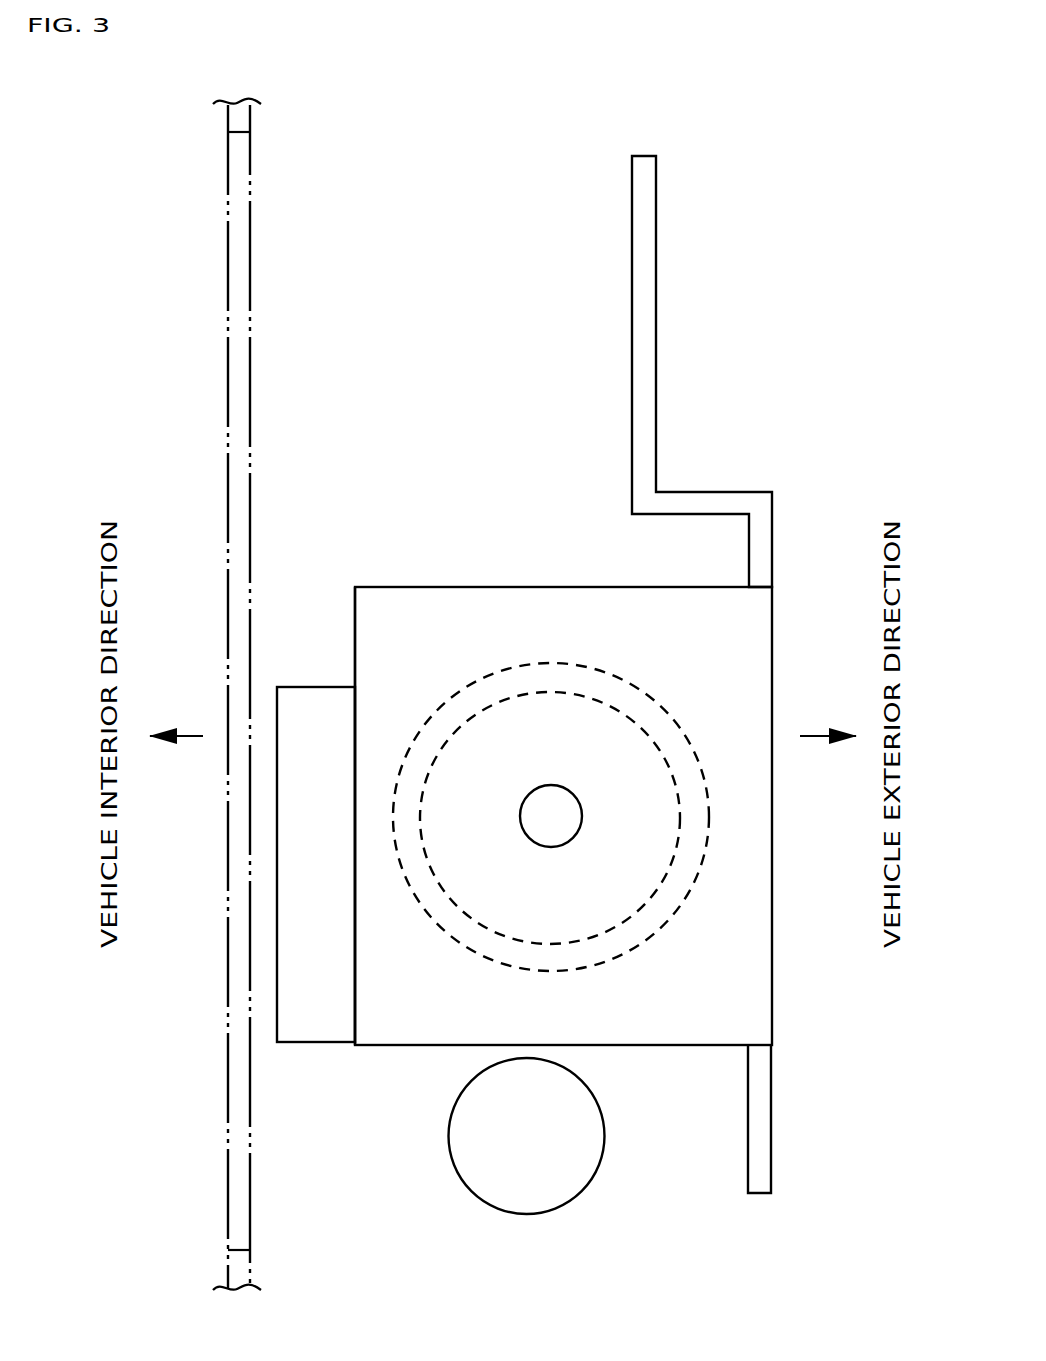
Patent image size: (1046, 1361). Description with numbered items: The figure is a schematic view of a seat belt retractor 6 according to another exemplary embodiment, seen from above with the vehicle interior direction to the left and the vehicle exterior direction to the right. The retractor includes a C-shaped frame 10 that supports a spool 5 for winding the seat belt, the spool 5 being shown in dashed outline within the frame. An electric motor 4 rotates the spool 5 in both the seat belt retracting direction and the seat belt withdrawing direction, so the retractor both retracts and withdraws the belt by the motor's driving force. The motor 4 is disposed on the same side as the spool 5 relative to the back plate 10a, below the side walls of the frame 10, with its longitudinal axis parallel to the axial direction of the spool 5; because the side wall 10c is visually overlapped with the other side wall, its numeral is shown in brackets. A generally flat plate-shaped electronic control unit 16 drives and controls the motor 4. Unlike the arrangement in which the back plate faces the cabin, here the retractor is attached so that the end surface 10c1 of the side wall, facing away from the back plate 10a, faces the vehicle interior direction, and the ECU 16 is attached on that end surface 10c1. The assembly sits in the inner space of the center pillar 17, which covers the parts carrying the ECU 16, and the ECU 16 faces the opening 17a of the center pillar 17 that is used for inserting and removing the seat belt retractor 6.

The electric motor 4 is at (545, 1168).
The spool 5 is at (588, 694).
The seat belt retractor 6 is at (413, 428).
The frame 10 is at (703, 488).
The back plate 10a is at (765, 1090).
The side wall 10c is at (650, 1023).
The end surface 10c1 is at (355, 653).
The electronic control unit (ECU) 16 is at (317, 1022).
The center pillar 17 is at (227, 1063).
The opening 17a is at (238, 135).